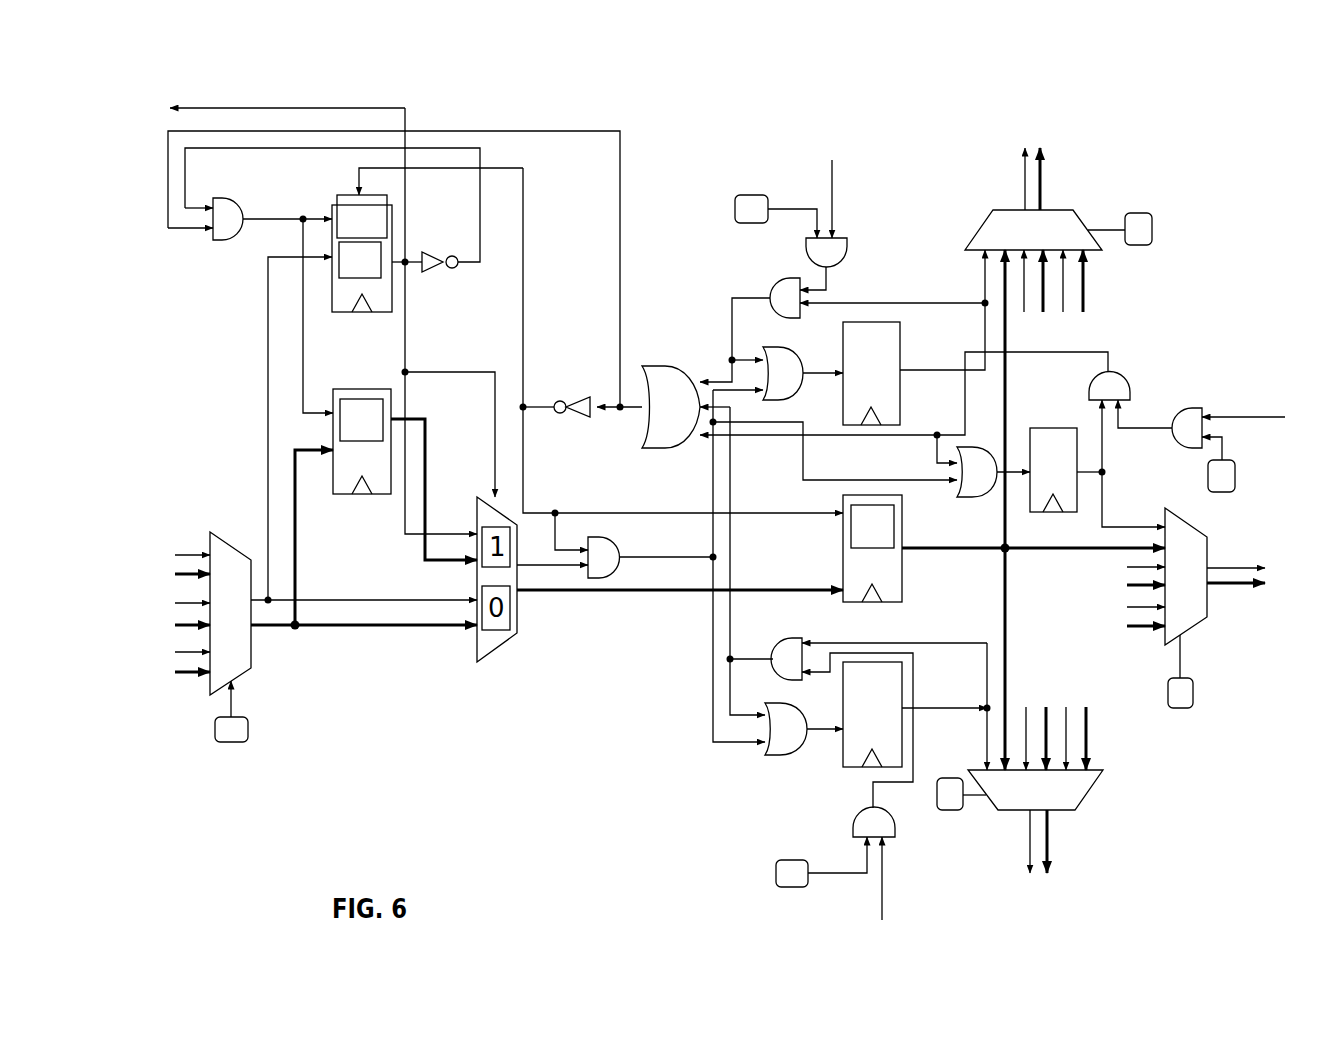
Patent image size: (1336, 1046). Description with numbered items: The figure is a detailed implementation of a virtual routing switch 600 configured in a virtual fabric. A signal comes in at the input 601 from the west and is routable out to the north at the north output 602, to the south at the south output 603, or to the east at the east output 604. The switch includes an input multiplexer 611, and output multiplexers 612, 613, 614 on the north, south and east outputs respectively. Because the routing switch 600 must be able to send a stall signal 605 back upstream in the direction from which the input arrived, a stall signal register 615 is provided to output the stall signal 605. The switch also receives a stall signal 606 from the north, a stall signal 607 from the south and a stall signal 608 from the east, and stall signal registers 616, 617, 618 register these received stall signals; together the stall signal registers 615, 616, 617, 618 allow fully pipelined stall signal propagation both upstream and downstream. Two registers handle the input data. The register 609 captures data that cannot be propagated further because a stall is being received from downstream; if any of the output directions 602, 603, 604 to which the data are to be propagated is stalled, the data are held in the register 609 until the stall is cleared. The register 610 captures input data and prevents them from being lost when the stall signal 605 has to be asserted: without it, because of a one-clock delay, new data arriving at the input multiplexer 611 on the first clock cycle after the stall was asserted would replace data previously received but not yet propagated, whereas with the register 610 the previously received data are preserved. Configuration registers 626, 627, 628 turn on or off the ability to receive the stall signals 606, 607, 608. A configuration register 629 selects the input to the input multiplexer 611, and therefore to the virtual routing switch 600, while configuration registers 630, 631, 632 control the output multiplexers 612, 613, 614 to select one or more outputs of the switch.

The routing switch 600 is at (1205, 132).
The input 601 is at (170, 530).
The north output 602 is at (1047, 133).
The south output 603 is at (1099, 846).
The east output 604 is at (1273, 666).
The stall signal 605 is at (304, 106).
The stall signal from the north 606 is at (830, 187).
The stall signal from the south 607 is at (877, 888).
The stall signal from the east 608 is at (1240, 420).
The register 609 is at (893, 603).
The register 610 is at (383, 497).
The input multiplexer 611 is at (230, 543).
The output multiplexer 612 is at (975, 235).
The output multiplexer 613 is at (1100, 793).
The output multiplexer 614 is at (1192, 628).
The stall signal register 615 is at (345, 195).
The stall signal register 616 is at (905, 347).
The stall signal register 617 is at (855, 768).
The stall signal register 618 is at (1050, 428).
The configuration register 626 is at (748, 223).
The configuration register 627 is at (786, 860).
The configuration register 628 is at (1237, 478).
The configuration register 629 is at (232, 743).
The configuration register 630 is at (1140, 246).
The configuration register 631 is at (952, 812).
The configuration register 632 is at (1180, 710).